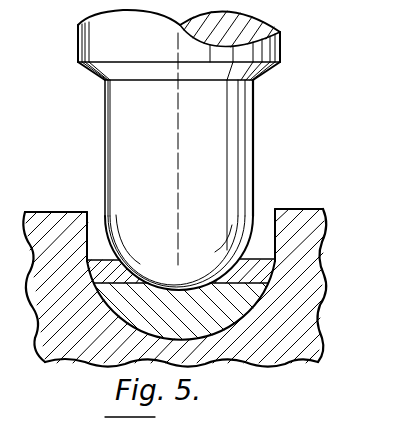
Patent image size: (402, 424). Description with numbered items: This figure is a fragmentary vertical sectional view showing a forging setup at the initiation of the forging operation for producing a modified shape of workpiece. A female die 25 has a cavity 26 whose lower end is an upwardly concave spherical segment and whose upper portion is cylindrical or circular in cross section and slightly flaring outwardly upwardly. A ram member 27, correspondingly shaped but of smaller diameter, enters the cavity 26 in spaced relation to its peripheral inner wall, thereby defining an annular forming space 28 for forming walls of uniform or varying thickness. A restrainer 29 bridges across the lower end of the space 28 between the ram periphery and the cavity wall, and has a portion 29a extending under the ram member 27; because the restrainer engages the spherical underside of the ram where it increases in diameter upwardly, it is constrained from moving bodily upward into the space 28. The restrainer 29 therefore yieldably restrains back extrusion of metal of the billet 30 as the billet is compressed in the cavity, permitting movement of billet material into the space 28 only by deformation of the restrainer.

The female die 25 is at (298, 285).
The cavity 26 is at (99, 211).
The ram member 27 is at (232, 165).
The annular forming space 28 is at (259, 213).
The restrainer 29 is at (270, 240).
The portion of restrainer 29a is at (253, 304).
The billet 30 is at (258, 365).